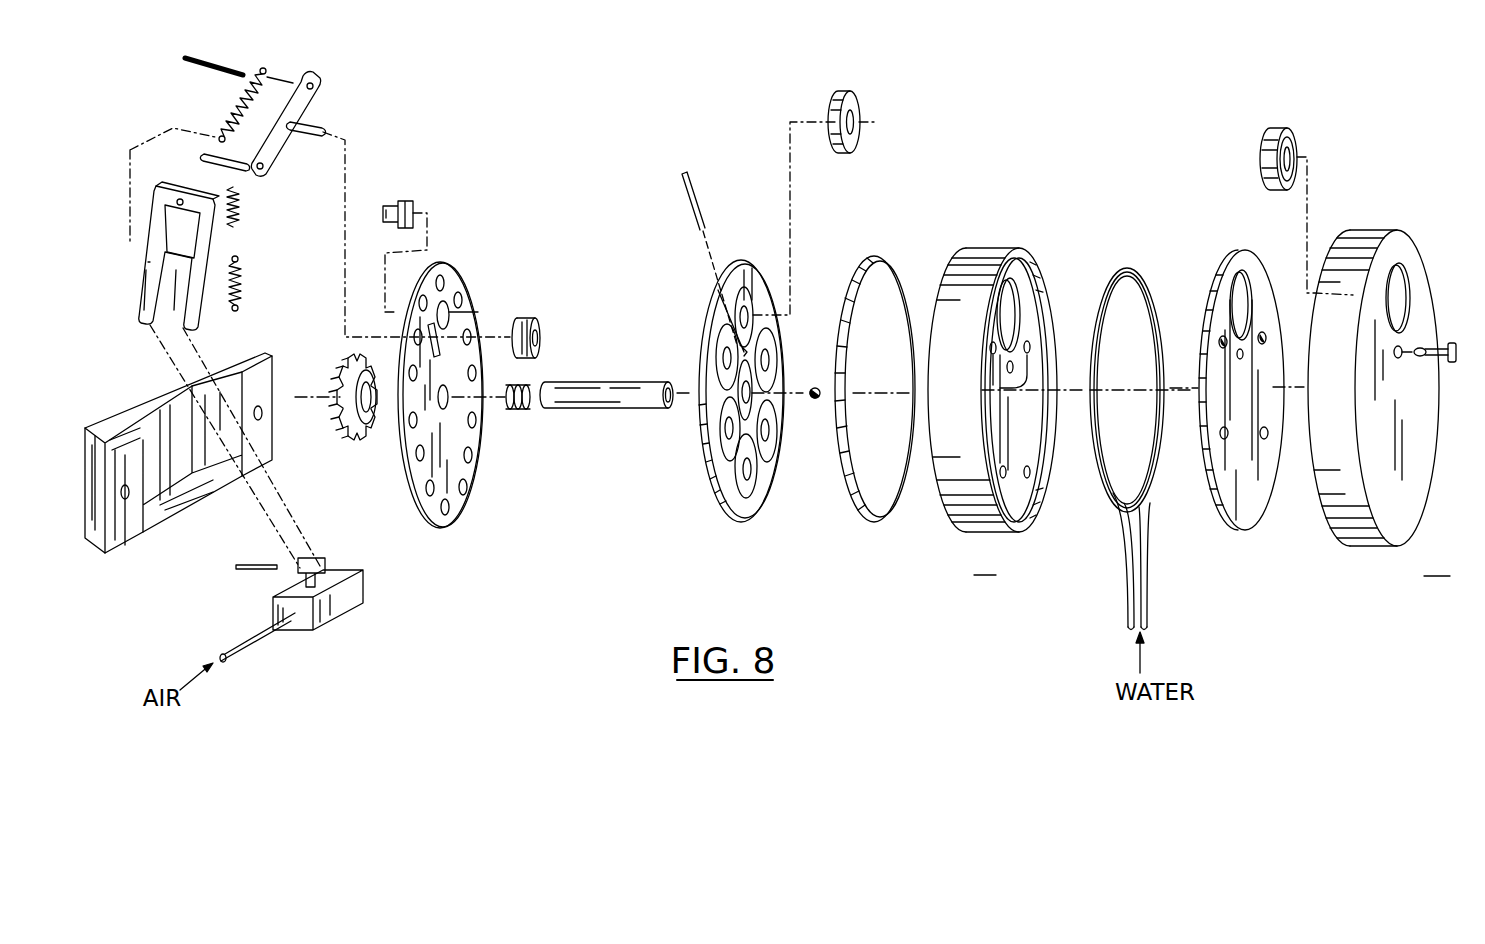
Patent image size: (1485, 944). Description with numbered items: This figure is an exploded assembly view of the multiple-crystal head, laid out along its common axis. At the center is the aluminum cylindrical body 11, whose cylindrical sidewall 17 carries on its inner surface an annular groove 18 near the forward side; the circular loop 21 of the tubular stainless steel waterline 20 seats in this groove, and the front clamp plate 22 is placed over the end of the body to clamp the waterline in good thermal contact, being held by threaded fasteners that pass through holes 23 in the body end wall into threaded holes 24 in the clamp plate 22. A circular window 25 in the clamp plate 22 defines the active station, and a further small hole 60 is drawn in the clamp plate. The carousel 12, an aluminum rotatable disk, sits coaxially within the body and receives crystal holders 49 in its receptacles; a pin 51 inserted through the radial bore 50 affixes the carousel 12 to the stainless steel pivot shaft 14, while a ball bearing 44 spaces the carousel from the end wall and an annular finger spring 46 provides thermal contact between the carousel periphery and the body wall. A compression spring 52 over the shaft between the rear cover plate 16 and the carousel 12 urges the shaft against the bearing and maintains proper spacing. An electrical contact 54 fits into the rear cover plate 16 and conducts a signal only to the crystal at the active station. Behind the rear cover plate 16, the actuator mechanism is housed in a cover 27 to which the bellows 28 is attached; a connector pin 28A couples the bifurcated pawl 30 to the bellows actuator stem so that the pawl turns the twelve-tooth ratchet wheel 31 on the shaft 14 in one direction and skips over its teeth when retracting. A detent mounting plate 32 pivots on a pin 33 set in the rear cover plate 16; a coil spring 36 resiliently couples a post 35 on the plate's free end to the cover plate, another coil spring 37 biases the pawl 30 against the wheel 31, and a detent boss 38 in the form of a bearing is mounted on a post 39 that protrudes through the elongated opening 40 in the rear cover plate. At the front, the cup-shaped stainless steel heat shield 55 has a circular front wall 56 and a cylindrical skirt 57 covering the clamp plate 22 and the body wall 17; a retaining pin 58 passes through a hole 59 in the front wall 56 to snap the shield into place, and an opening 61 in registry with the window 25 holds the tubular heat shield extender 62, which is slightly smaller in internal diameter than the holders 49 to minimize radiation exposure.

The cylindrical body 11 is at (973, 412).
The carousel 12 is at (758, 262).
The pivot shaft 14 is at (600, 380).
The rear cover plate 16 is at (440, 268).
The cylindrical sidewall 17 is at (983, 250).
The annular groove 18 is at (1037, 275).
The waterline 20 is at (1143, 528).
The circular loop 21 is at (1133, 272).
The front clamp plate 22 is at (1259, 497).
The holes 23 is at (985, 390).
The threaded holes 24 is at (1265, 335).
The circular window 25 is at (1247, 250).
The cover 27 is at (222, 367).
The bellows 28 is at (327, 563).
The connector pin 28A is at (262, 563).
The bifurcated pawl 30 is at (143, 277).
The ratchet wheel 31 is at (350, 440).
The detent mounting plate 32 is at (314, 74).
The pin 33 is at (217, 62).
The post 35 is at (241, 170).
The coil spring 36 is at (241, 268).
The coil spring 37 is at (237, 105).
The detent boss 38 is at (518, 320).
The post 39 is at (313, 127).
The elongated opening 40 is at (443, 346).
The ball bearing 44 is at (817, 383).
The annular finger spring 46 is at (878, 261).
The crystal holder 49 is at (852, 92).
The radial bore 50 is at (719, 291).
The pin 51 is at (700, 190).
The compression spring 52 is at (517, 410).
The electrical contact 54 is at (413, 210).
The heat shield 55 is at (1381, 403).
The front wall 56 is at (1424, 418).
The skirt 57 is at (1327, 263).
The retaining pin 58 is at (1447, 340).
The hole 59 is at (1396, 358).
The hole 60 is at (1244, 355).
The opening 61 is at (1403, 293).
The heat shield extender 62 is at (1265, 132).